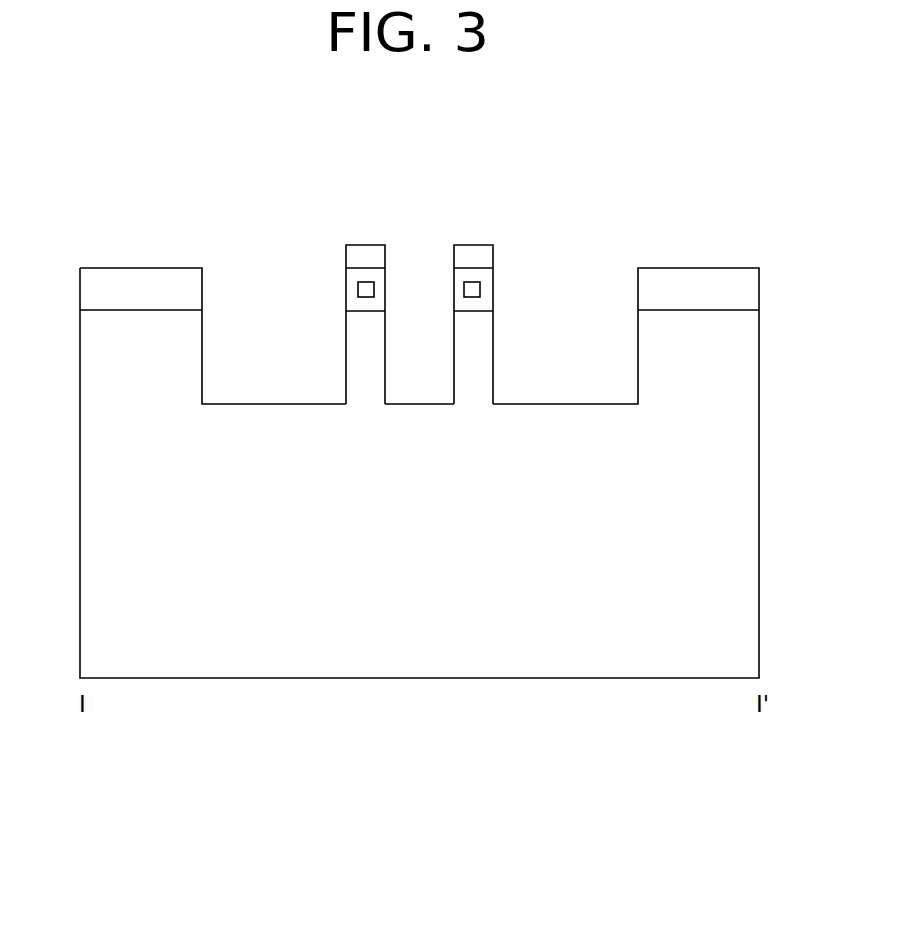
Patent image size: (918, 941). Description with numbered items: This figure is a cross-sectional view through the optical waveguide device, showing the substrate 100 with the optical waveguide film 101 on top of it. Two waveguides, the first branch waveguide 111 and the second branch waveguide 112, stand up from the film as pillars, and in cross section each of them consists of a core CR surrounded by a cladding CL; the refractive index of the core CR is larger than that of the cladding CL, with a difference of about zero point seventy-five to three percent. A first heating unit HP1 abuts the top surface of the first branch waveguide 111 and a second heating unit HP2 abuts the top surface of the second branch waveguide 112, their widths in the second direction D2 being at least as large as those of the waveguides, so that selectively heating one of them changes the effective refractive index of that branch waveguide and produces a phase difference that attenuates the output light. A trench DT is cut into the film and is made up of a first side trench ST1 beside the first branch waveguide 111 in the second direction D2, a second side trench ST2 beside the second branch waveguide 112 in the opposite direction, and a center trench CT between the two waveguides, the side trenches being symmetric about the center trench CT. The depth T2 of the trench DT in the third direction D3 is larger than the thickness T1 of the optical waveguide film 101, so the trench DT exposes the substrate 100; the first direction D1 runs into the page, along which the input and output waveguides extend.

The substrate 100 is at (420, 667).
The optical waveguide film 101 is at (158, 268).
The first branch waveguide 111 is at (496, 288).
The second branch waveguide 112 is at (352, 175).
The core CR is at (357, 292).
The cladding CL is at (346, 286).
The first heating unit HP1 is at (472, 254).
The second heating unit HP2 is at (376, 254).
The thickness of the optical waveguide film T1 is at (189, 272).
The depth of the trench T2 is at (636, 268).
The first side trench ST1 is at (563, 405).
The second side trench ST2 is at (272, 405).
The center trench CT is at (418, 405).
The trench DT is at (592, 487).
The first direction D1 is at (94, 874).
The second direction D2 is at (105, 860).
The third direction D3 is at (93, 848).